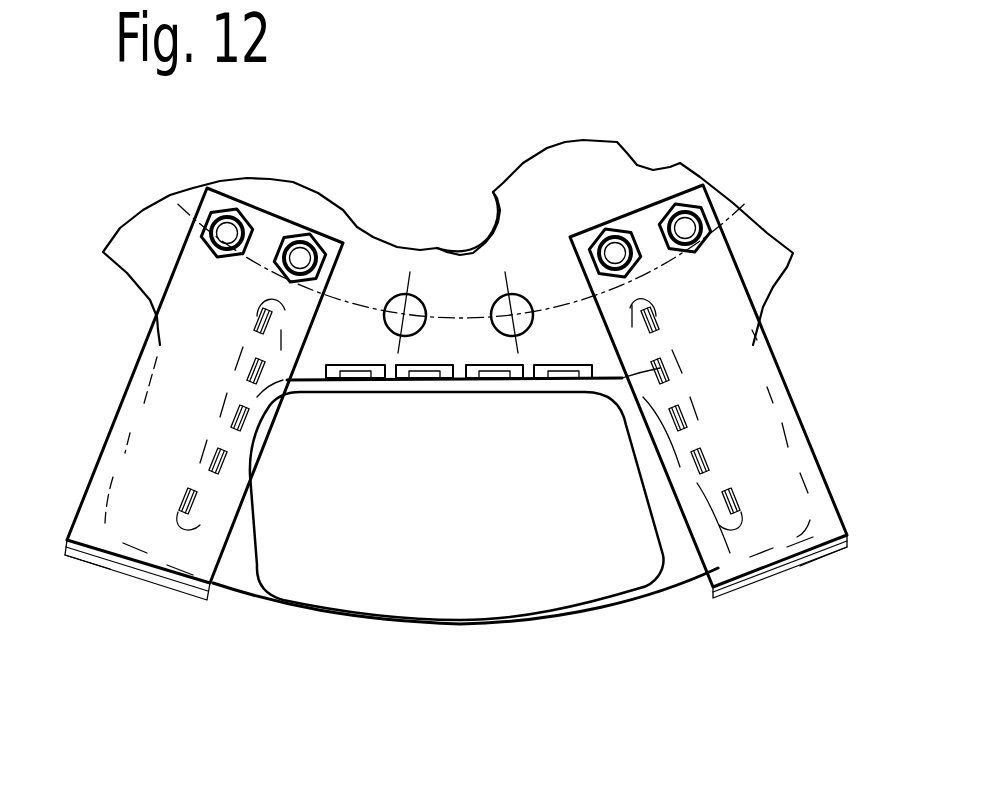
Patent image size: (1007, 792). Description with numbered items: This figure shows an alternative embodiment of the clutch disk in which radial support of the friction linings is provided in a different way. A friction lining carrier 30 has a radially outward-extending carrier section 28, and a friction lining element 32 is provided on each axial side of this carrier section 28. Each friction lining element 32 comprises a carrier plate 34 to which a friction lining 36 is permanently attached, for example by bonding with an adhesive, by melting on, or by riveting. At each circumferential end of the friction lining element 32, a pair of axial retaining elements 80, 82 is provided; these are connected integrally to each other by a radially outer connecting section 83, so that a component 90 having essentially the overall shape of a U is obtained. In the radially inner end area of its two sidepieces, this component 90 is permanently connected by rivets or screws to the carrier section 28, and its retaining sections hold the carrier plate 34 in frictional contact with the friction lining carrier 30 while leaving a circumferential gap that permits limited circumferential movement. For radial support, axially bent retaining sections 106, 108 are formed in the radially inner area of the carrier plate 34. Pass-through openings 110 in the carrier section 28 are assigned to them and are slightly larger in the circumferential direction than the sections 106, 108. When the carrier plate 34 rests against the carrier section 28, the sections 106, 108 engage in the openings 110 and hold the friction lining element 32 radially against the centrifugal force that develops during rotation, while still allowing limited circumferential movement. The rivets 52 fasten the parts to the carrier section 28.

The carrier section 28 is at (421, 253).
The friction lining carrier 30 is at (447, 202).
The friction lining element 32 is at (465, 636).
The carrier plate 34 is at (492, 546).
The friction lining 36 is at (457, 565).
The rivets 52 is at (478, 414).
The axial retaining element 80 is at (718, 386).
The axial retaining element 82 is at (192, 385).
The radially outer connecting section 83 is at (456, 606).
The component 90 is at (490, 551).
The axially bent retaining section 106 is at (469, 422).
The axially bent retaining section 108 is at (525, 241).
The pass-through opening 110 is at (727, 270).